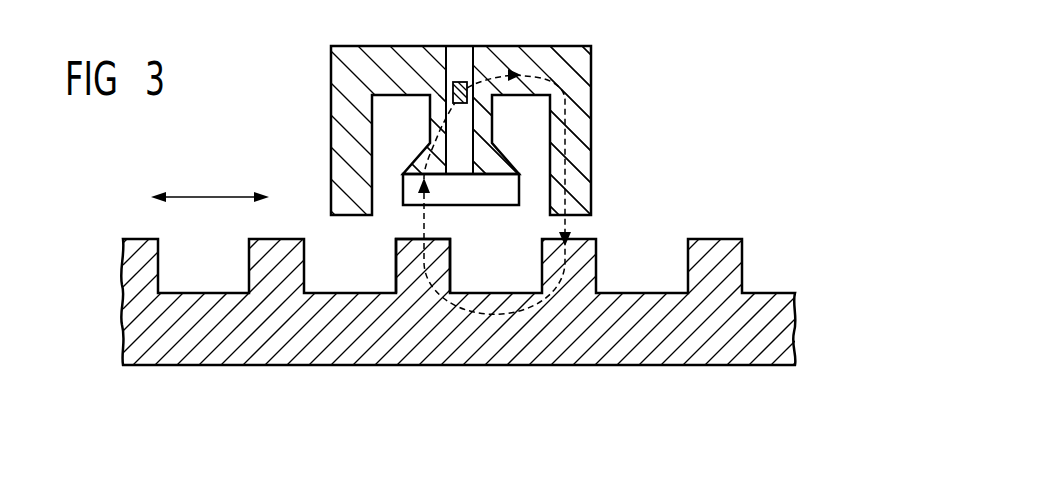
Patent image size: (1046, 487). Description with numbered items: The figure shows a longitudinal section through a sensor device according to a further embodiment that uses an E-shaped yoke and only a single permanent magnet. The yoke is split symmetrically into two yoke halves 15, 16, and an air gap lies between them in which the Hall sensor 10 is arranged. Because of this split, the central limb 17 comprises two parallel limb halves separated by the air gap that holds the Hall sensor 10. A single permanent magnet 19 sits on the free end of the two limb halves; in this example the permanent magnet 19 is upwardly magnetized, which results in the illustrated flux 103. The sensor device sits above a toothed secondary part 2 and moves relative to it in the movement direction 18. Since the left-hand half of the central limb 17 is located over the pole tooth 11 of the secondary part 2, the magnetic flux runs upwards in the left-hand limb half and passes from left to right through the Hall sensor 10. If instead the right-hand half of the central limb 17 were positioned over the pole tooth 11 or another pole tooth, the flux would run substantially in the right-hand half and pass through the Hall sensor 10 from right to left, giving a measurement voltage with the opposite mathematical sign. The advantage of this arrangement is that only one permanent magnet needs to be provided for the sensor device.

The secondary part 2 is at (613, 265).
The Hall sensor 10 is at (462, 82).
The pole tooth 11 is at (400, 258).
The yoke half 15 is at (331, 79).
The yoke half 16 is at (587, 64).
The central limb 17 is at (500, 148).
The movement direction 18 is at (211, 197).
The permanent magnet 19 is at (470, 193).
The flux 103 is at (566, 123).